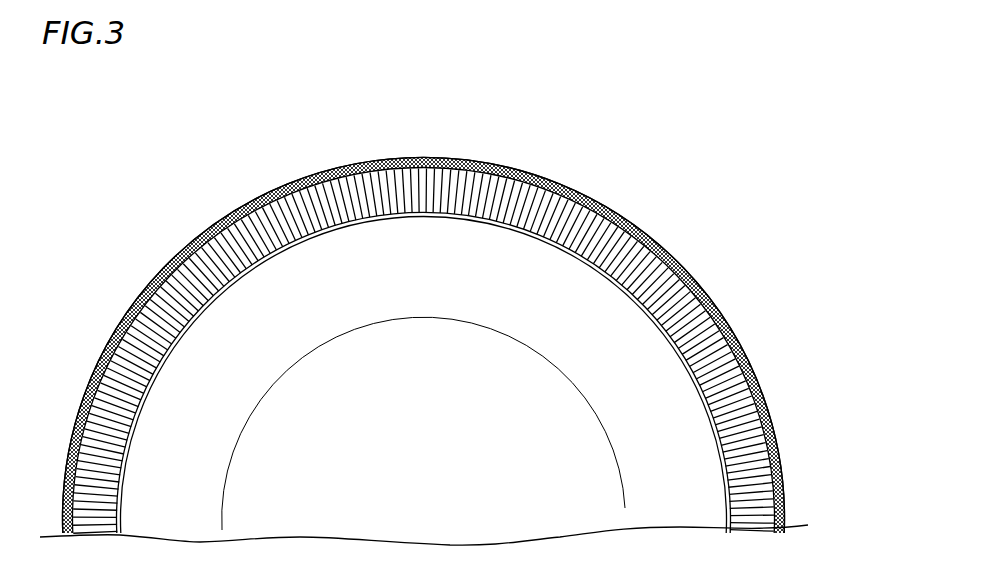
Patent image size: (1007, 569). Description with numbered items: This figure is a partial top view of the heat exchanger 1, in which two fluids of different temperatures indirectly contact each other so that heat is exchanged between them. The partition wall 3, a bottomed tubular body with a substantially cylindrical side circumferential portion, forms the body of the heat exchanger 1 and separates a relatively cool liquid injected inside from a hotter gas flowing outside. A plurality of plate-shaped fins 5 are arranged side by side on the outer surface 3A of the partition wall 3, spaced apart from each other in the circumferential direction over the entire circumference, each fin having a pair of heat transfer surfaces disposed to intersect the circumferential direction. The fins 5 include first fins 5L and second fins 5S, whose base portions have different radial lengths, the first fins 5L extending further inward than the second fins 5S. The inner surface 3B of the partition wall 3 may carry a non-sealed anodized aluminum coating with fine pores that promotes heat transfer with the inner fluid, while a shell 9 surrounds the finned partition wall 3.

The heat exchanger 1 is at (697, 125).
The partition wall 3 is at (497, 213).
The outer surface of the partition wall 3A is at (230, 222).
The inner surface of the partition wall 3B is at (415, 218).
The plate-shaped fins 5 is at (370, 112).
The first fins 5L is at (310, 182).
The second fins 5S is at (360, 170).
The shell 9 is at (628, 214).